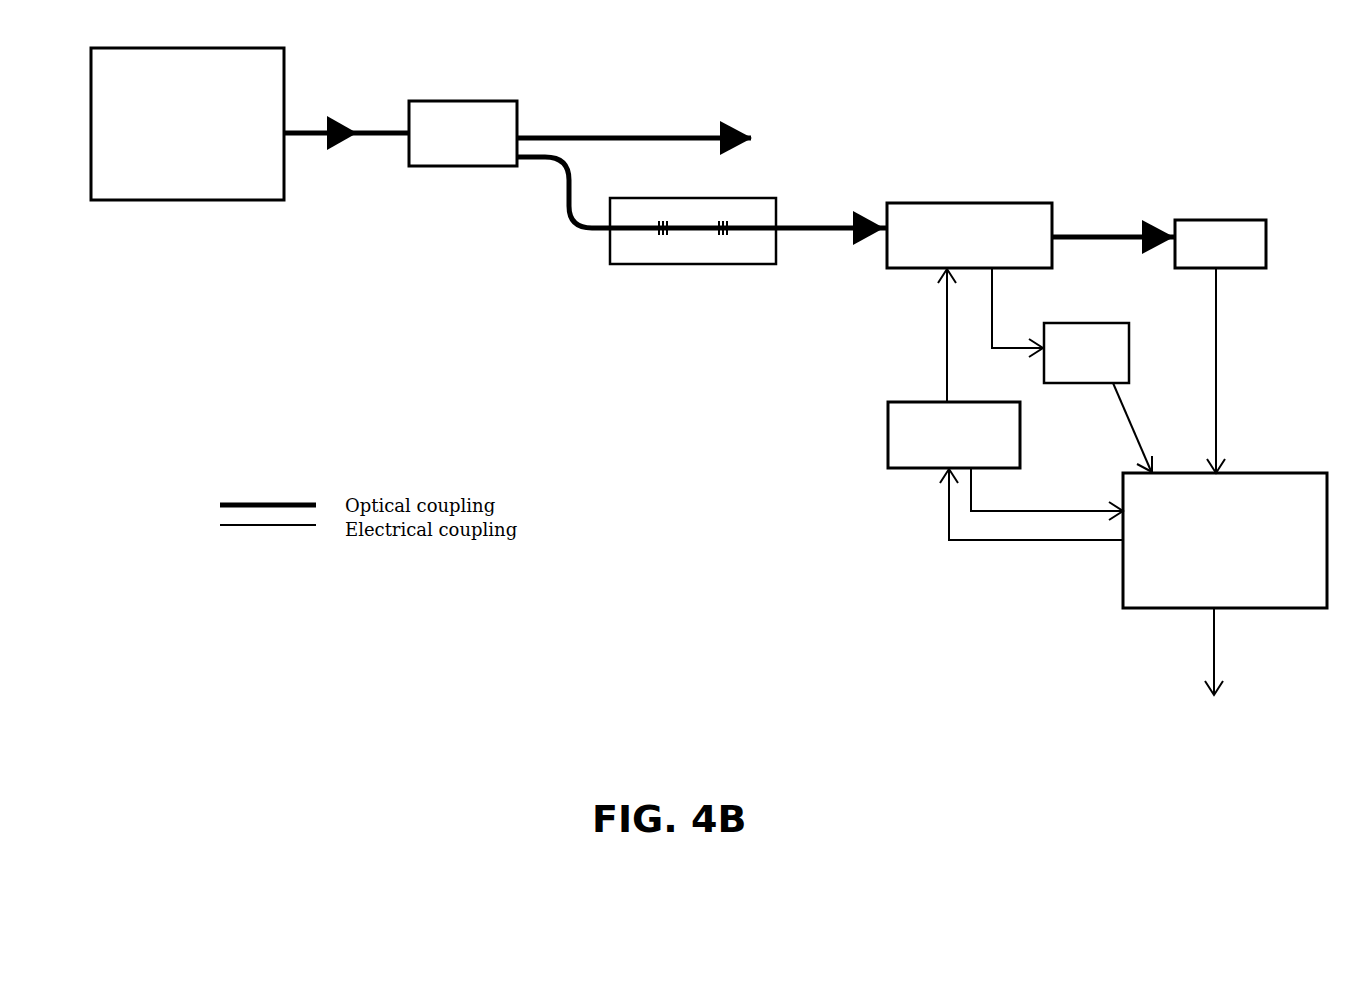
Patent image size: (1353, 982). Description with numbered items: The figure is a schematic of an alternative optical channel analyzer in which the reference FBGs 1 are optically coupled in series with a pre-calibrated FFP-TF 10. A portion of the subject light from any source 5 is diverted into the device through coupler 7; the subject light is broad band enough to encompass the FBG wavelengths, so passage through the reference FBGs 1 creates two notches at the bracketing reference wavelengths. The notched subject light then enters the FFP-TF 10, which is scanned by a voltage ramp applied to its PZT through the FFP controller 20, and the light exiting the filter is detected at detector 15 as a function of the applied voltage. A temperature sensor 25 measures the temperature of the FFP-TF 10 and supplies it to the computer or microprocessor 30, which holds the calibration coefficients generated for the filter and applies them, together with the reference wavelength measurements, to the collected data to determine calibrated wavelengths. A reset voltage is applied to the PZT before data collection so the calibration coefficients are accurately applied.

The reference FBGs 1 is at (647, 258).
The subject light source 5 is at (193, 183).
The coupler 7 is at (460, 122).
The FFP-TF 10 is at (904, 226).
The detector 15 is at (1222, 238).
The FFP controller 20 is at (896, 427).
The temperature sensor 25 is at (1083, 368).
The computer or microprocessor 30 is at (1157, 588).